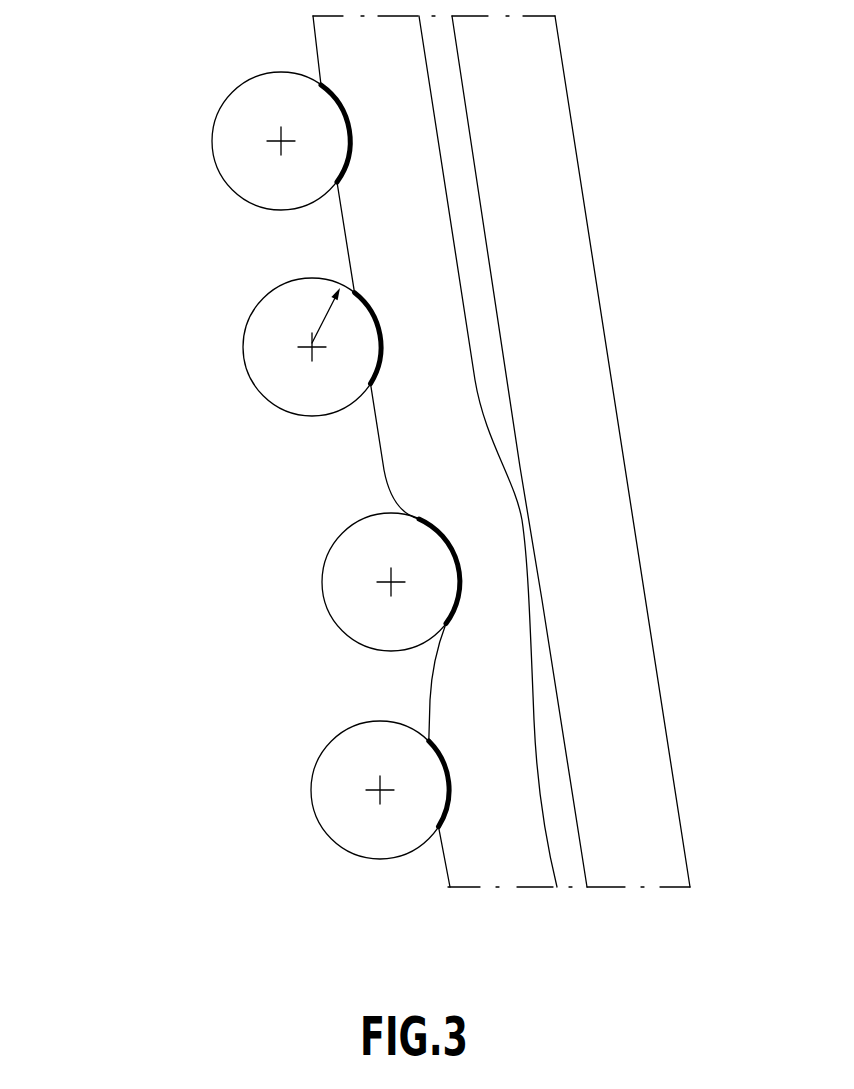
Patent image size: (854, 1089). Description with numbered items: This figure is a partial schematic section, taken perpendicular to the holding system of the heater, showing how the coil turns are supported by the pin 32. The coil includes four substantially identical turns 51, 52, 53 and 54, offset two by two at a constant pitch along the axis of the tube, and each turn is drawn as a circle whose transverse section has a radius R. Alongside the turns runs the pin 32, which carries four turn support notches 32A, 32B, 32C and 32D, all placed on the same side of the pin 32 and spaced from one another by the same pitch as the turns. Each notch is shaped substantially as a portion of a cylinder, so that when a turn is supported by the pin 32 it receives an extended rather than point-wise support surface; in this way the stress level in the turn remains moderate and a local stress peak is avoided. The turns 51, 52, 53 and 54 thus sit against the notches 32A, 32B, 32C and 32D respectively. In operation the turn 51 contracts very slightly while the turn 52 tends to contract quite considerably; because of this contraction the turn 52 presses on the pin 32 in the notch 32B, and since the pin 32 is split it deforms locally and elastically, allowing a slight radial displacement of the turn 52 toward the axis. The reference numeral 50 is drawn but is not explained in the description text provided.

The pin 32 is at (619, 340).
The turn support notch 32A is at (443, 792).
The turn support notch 32B is at (453, 592).
The turn support notch 32C is at (373, 348).
The turn support notch 32D is at (339, 172).
The roller assembly 50 is at (118, 111).
The turn 51 is at (311, 788).
The turn 52 is at (322, 580).
The turn 53 is at (243, 347).
The turn 54 is at (213, 137).
The radius of the transverse section of the turns R is at (321, 317).